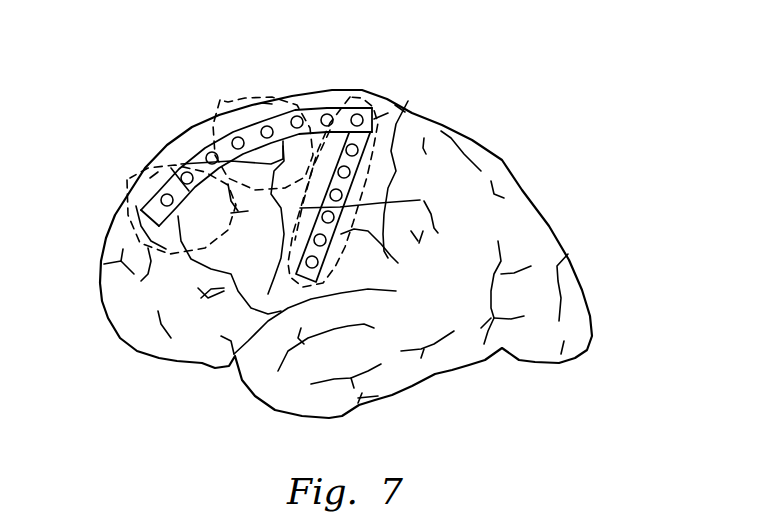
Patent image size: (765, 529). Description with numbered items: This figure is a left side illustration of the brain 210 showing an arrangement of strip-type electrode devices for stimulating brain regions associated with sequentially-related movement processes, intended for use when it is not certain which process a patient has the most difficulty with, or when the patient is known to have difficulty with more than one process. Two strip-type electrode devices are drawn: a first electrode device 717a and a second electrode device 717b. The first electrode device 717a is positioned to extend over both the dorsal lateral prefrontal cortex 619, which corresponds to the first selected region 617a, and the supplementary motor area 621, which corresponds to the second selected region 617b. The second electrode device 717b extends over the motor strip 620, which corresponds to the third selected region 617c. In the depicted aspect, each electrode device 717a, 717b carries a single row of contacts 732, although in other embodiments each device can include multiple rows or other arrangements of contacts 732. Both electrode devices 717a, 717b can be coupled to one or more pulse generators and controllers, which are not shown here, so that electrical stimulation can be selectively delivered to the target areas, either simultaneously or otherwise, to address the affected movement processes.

The brain 210 is at (412, 254).
The dorsal lateral prefrontal cortex 619 is at (90, 174).
The motor strip 620 is at (437, 91).
The supplementary motor area 621 is at (273, 78).
The first selected region 617a is at (131, 220).
The second selected region 617b is at (260, 109).
The third selected region 617c is at (333, 158).
The first electrode device 717a is at (250, 143).
The second electrode device 717b is at (387, 209).
The contacts 732 is at (395, 214).